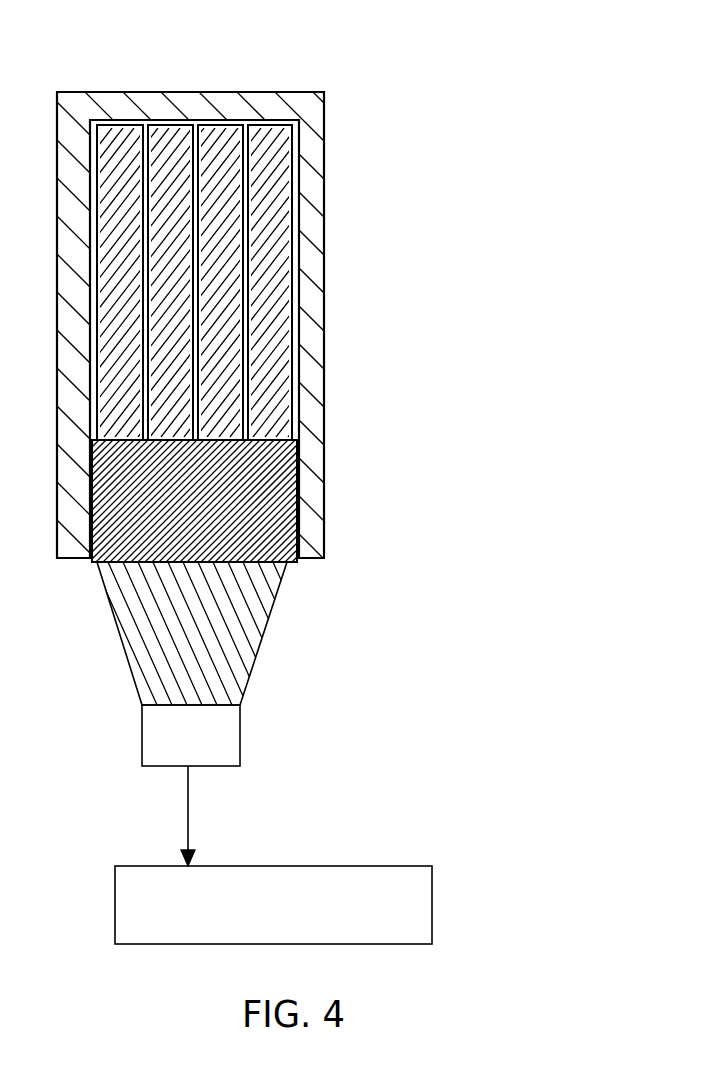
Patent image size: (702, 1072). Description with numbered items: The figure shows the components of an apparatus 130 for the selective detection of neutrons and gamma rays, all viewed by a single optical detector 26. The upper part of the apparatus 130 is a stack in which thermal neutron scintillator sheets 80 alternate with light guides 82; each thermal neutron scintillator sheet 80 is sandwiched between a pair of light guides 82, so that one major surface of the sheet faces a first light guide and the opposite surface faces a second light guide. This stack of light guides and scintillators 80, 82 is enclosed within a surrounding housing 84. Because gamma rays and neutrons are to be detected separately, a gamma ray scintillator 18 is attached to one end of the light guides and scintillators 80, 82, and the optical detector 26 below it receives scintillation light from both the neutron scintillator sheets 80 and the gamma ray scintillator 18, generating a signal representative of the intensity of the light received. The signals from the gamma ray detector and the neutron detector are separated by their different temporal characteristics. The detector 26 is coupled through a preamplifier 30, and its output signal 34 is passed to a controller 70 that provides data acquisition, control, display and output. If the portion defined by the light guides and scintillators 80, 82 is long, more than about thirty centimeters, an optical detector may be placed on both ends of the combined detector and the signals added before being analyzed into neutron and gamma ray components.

The housing 84 is at (315, 110).
The thermal neutron scintillator sheet 80 is at (292, 127).
The light guide 82 is at (265, 293).
The gamma ray scintillator 18 is at (295, 460).
The optical detector 26 is at (257, 635).
The preamplifier 30 is at (237, 733).
The discharge stream 34 is at (188, 822).
The controller 70 is at (325, 865).
The apparatus for selective detection of neutrons and gamma rays 130 is at (530, 840).